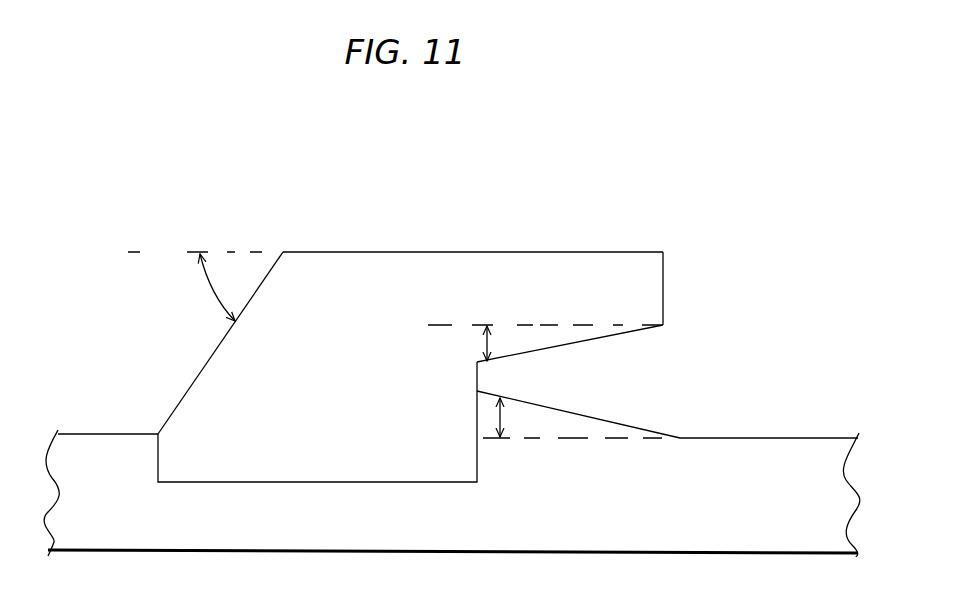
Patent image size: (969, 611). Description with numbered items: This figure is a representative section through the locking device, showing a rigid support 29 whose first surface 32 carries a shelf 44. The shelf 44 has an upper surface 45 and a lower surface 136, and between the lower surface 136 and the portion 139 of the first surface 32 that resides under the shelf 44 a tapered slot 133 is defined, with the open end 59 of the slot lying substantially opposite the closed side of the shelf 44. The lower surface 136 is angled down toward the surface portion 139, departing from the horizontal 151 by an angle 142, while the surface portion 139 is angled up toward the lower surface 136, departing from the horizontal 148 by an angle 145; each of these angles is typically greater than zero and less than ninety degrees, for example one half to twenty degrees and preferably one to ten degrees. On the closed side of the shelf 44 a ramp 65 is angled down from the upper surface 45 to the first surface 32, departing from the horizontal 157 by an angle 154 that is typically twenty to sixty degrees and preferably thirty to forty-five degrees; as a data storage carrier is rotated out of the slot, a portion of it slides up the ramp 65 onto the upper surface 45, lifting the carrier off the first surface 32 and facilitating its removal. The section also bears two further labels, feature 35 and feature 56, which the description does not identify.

The rigid support 29 is at (774, 541).
The first surface of rigid support 32 is at (117, 434).
The bottom surface of substrate 35 is at (193, 550).
The shelf 44 is at (358, 252).
The upper surface of shelf 45 is at (641, 252).
The vertical wall of recess 56 is at (477, 375).
The open end of tapered slot 59 is at (612, 407).
The ramp 65 is at (205, 367).
The tapered slot 133 is at (652, 381).
The lower surface of shelf 136 is at (593, 350).
The portion of first surface residing under shelf 139 is at (553, 405).
The angle of departure of lower surface 142 is at (480, 338).
The angle of departure of surface portion 145 is at (496, 414).
The horizontal 148 is at (615, 440).
The horizontal 151 is at (438, 318).
The angle of departure of ramp 154 is at (207, 290).
The horizontal 157 is at (167, 252).